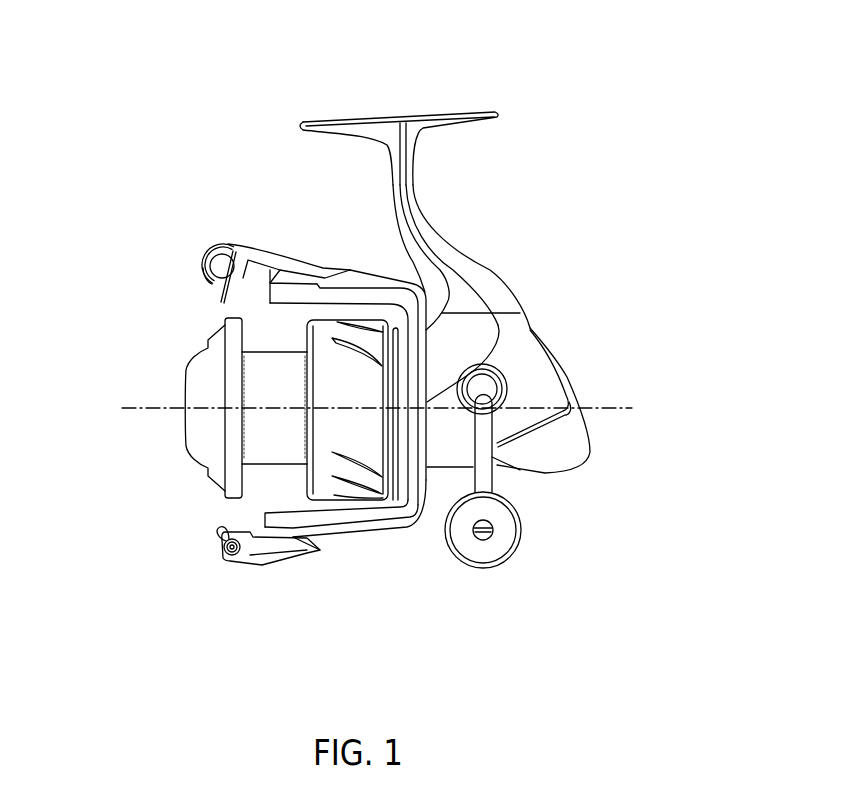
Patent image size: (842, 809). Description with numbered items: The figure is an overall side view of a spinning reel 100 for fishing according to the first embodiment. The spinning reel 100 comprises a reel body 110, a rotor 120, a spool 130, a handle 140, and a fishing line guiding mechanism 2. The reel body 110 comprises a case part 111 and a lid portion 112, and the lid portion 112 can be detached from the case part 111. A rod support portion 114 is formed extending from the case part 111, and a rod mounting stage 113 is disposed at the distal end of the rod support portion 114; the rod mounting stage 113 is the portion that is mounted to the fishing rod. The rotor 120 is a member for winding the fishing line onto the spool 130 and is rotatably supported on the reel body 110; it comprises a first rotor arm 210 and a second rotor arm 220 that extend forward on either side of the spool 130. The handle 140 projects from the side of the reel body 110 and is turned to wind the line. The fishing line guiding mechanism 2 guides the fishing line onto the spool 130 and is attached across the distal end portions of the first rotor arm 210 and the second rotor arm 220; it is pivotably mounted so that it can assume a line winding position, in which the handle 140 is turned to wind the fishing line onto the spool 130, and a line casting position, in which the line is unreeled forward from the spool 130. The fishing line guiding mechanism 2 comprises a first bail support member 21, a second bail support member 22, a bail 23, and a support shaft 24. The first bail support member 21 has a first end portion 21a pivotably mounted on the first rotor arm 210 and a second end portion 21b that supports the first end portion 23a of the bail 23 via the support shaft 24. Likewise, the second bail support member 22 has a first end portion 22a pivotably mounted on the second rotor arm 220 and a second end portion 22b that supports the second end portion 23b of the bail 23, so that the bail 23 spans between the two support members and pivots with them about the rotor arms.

The spinning reel 100 is at (533, 76).
The reel body 110 is at (482, 256).
The case part 111 is at (530, 326).
The lid portion 112 is at (478, 331).
The rod mounting stage 113 is at (438, 112).
The rod support portion 114 is at (437, 222).
The rotor 120 is at (348, 276).
The spool 130 is at (268, 352).
The handle 140 is at (505, 489).
The first rotor arm 210 is at (378, 288).
The second rotor arm 220 is at (365, 546).
The fishing line guiding mechanism 2 is at (200, 232).
The first bail support member 21 is at (270, 246).
The first end portion 21a is at (316, 266).
The second end portion 21b is at (226, 248).
The second bail support member 22 is at (262, 567).
The first end portion 22a is at (298, 553).
The second end portion 22b is at (226, 566).
The bail 23 is at (212, 300).
The first end portion 23a is at (204, 281).
The second end portion 23b is at (221, 550).
The support shaft 24 is at (214, 264).